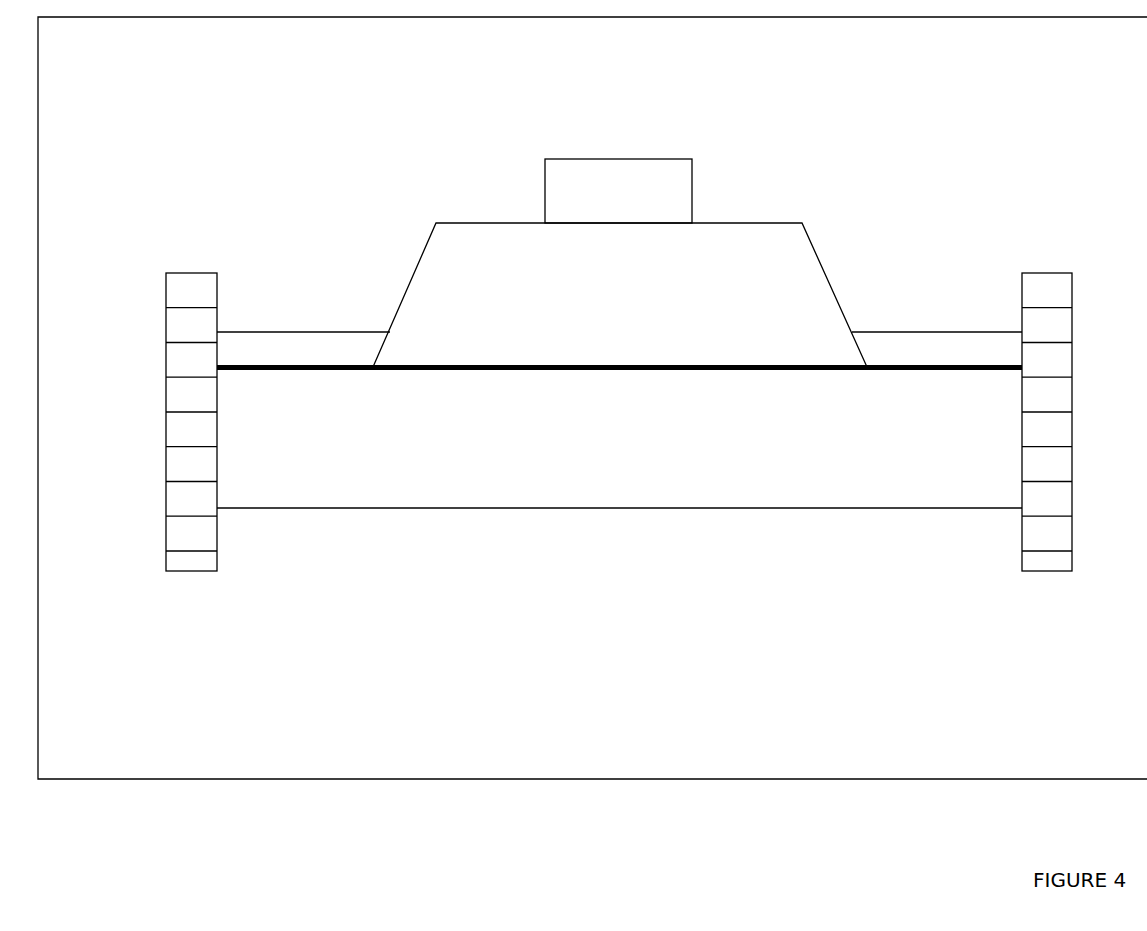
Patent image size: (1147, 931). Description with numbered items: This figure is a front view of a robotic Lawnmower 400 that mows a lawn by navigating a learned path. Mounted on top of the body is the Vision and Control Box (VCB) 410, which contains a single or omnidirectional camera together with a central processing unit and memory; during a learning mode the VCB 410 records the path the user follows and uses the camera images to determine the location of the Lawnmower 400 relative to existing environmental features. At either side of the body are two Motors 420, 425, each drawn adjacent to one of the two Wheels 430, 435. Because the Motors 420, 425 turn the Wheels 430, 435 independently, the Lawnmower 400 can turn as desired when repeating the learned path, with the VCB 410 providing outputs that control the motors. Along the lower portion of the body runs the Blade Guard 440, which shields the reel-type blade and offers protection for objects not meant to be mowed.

The lawnmower 400 is at (592, 398).
The Vision and Control Box (VCB) 410 is at (697, 185).
The motor 420 is at (947, 337).
The motor 425 is at (308, 323).
The wheel 430 is at (1018, 553).
The wheel 435 is at (225, 543).
The blade guard 440 is at (465, 515).